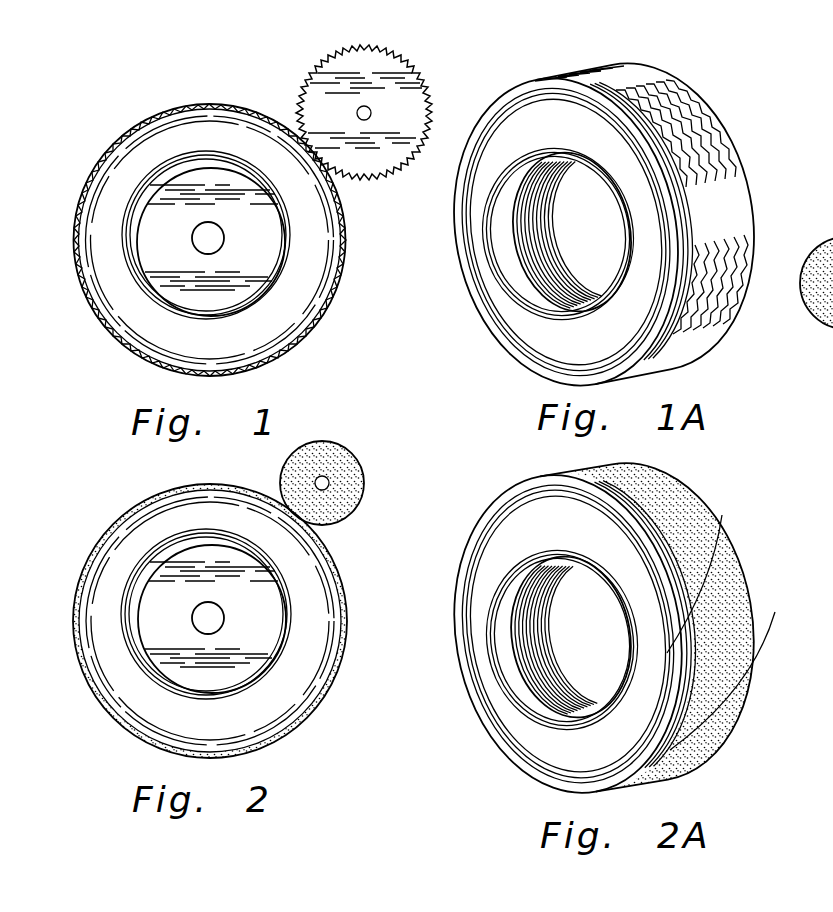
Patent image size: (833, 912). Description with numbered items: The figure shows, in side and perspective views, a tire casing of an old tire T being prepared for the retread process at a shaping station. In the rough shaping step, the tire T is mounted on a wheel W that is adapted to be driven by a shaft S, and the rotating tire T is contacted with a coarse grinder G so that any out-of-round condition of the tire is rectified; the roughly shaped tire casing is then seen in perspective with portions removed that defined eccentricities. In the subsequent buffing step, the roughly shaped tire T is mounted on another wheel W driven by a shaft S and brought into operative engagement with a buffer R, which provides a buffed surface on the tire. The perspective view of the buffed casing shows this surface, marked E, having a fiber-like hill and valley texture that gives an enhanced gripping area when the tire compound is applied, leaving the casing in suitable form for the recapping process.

In FIG. 1, the tire T is at (225, 130).
In FIG. 1A, the tire T is at (465, 140).
In FIG. 2, the tire T is at (262, 712).
In FIG. 2A, the tire T is at (513, 733).
In FIG. 1, the wheel W is at (262, 256).
In FIG. 2, the wheel W is at (263, 634).
In FIG. 1, the shaft S is at (212, 232).
In FIG. 2, the shaft S is at (212, 612).
In FIG. 1, the coarse grinder G is at (360, 78).
In FIG. 2, the buffer R is at (335, 455).
In FIG. 2A, the edge E is at (713, 693).